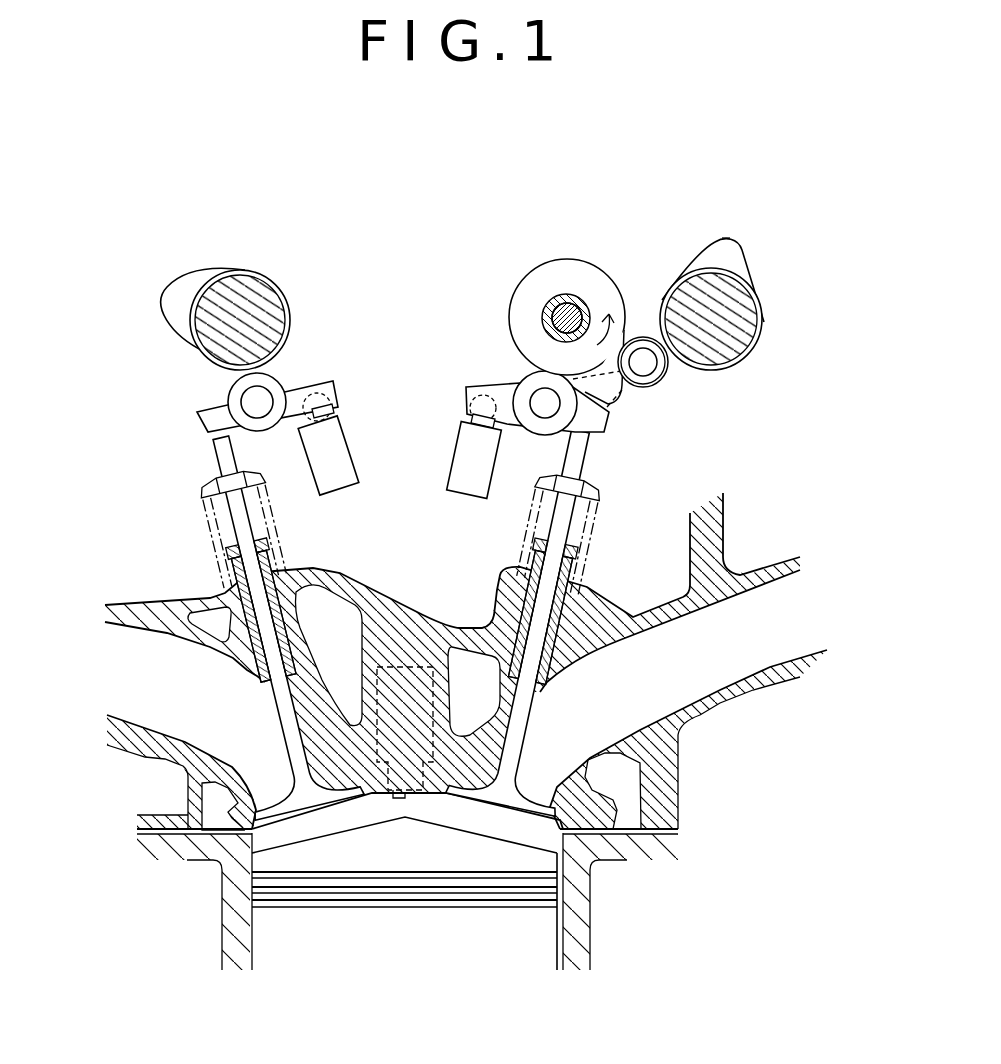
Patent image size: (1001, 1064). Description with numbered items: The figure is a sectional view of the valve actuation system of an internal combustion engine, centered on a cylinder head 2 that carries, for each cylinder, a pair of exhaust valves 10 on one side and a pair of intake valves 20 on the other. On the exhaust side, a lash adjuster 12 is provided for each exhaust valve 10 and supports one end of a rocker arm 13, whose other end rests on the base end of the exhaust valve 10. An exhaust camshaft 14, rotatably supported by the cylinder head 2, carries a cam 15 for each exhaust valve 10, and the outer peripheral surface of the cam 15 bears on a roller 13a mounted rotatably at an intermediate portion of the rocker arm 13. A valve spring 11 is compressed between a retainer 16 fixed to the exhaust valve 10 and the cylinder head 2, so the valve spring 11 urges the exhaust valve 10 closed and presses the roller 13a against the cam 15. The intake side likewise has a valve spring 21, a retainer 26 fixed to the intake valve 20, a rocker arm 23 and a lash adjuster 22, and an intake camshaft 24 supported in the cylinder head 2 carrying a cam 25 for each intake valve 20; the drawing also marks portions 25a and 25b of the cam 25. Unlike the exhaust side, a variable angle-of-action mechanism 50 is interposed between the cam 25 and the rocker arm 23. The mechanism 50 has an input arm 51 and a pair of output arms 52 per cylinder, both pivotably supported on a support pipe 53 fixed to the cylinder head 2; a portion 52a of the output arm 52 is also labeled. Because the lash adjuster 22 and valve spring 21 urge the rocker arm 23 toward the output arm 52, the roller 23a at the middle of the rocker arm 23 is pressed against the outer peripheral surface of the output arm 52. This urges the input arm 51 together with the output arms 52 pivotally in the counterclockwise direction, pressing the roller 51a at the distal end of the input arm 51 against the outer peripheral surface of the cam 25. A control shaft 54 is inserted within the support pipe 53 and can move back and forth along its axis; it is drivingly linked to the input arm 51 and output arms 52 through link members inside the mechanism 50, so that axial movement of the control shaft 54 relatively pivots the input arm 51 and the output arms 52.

The cylinder head 2 is at (680, 790).
The exhaust valve 10 is at (283, 704).
The valve spring 11 is at (216, 558).
The lash adjuster 12 is at (358, 467).
The rocker arm 13 is at (239, 380).
The roller 13a is at (228, 388).
The exhaust camshaft 14 is at (262, 281).
The cam 15 is at (200, 268).
The retainer 16 is at (198, 486).
The intake valve 20 is at (530, 708).
The valve spring 21 is at (596, 530).
The lash adjuster 22 is at (452, 433).
The rocker arm 23 is at (514, 383).
The roller 23a is at (518, 383).
The intake camshaft 24 is at (760, 325).
The cam 25 is at (749, 284).
The cam nose 25a is at (730, 238).
The cam base portion 25b is at (745, 360).
The retainer 26 is at (608, 494).
The variable angle-of-action mechanism 50 is at (584, 327).
The input arm 51 is at (676, 338).
The roller 51a is at (662, 382).
The output arm 52 is at (551, 362).
The control member arm 52a is at (619, 404).
The support pipe 53 is at (528, 279).
The control shaft 54 is at (565, 303).